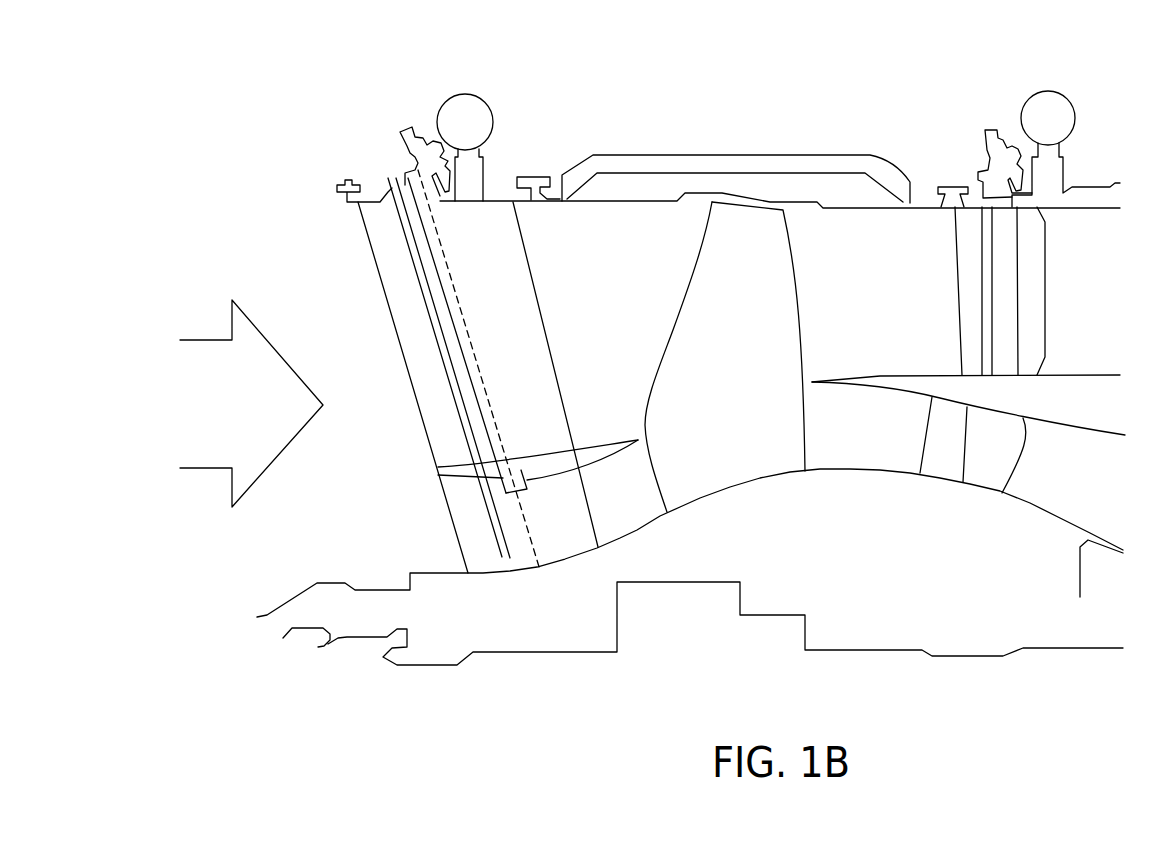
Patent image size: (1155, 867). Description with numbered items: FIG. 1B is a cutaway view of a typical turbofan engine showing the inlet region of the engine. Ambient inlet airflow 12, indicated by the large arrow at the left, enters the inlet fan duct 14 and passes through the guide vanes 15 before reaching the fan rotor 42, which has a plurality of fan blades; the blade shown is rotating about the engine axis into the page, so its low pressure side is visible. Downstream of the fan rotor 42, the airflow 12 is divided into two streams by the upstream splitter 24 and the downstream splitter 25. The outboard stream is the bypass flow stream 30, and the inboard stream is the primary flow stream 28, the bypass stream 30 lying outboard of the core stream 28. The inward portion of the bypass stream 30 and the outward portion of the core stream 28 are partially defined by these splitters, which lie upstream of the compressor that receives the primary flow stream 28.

The ambient inlet airflow 12 is at (185, 407).
The inlet fan duct 14 is at (525, 103).
The guide vanes 15 is at (515, 328).
The upstream splitter 24 is at (596, 456).
The downstream splitter 25 is at (868, 382).
The primary flow stream 28 is at (838, 449).
The bypass flow stream 30 is at (850, 272).
The fan rotor 42 is at (724, 307).